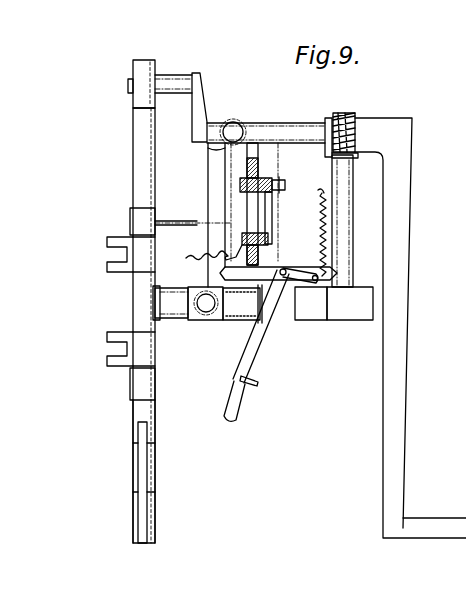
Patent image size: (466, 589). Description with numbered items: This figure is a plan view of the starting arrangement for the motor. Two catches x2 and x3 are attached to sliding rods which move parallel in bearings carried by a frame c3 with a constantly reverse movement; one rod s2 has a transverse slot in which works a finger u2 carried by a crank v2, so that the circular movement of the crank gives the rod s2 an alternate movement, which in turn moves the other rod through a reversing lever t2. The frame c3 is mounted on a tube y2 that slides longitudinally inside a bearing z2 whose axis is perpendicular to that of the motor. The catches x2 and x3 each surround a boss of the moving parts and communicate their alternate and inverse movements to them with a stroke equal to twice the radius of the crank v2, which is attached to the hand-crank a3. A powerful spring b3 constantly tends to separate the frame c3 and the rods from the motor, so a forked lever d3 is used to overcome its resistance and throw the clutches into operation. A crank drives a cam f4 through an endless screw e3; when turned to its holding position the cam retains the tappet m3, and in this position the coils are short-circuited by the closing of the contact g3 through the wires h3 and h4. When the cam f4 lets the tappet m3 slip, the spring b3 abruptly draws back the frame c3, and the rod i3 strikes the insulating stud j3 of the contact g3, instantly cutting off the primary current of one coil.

The finger u2 is at (171, 85).
The crank v2 is at (200, 109).
The endless screw e3 is at (350, 118).
The wire h3 is at (276, 180).
The hand-crank a3 is at (404, 249).
The catch x2 is at (126, 240).
The rod i3 is at (185, 221).
The insulating stud j3 is at (253, 222).
The contact g3 is at (272, 220).
The wire h4 is at (204, 258).
The rod s2 is at (133, 284).
The tube y2 is at (182, 319).
The bearing z2 is at (209, 311).
The spring b3 is at (248, 322).
The tappet m3 is at (288, 311).
The cam f4 is at (355, 313).
The catch x3 is at (113, 363).
The frame c3 is at (134, 463).
The reversing lever t2 is at (141, 481).
The forked lever d3 is at (236, 421).